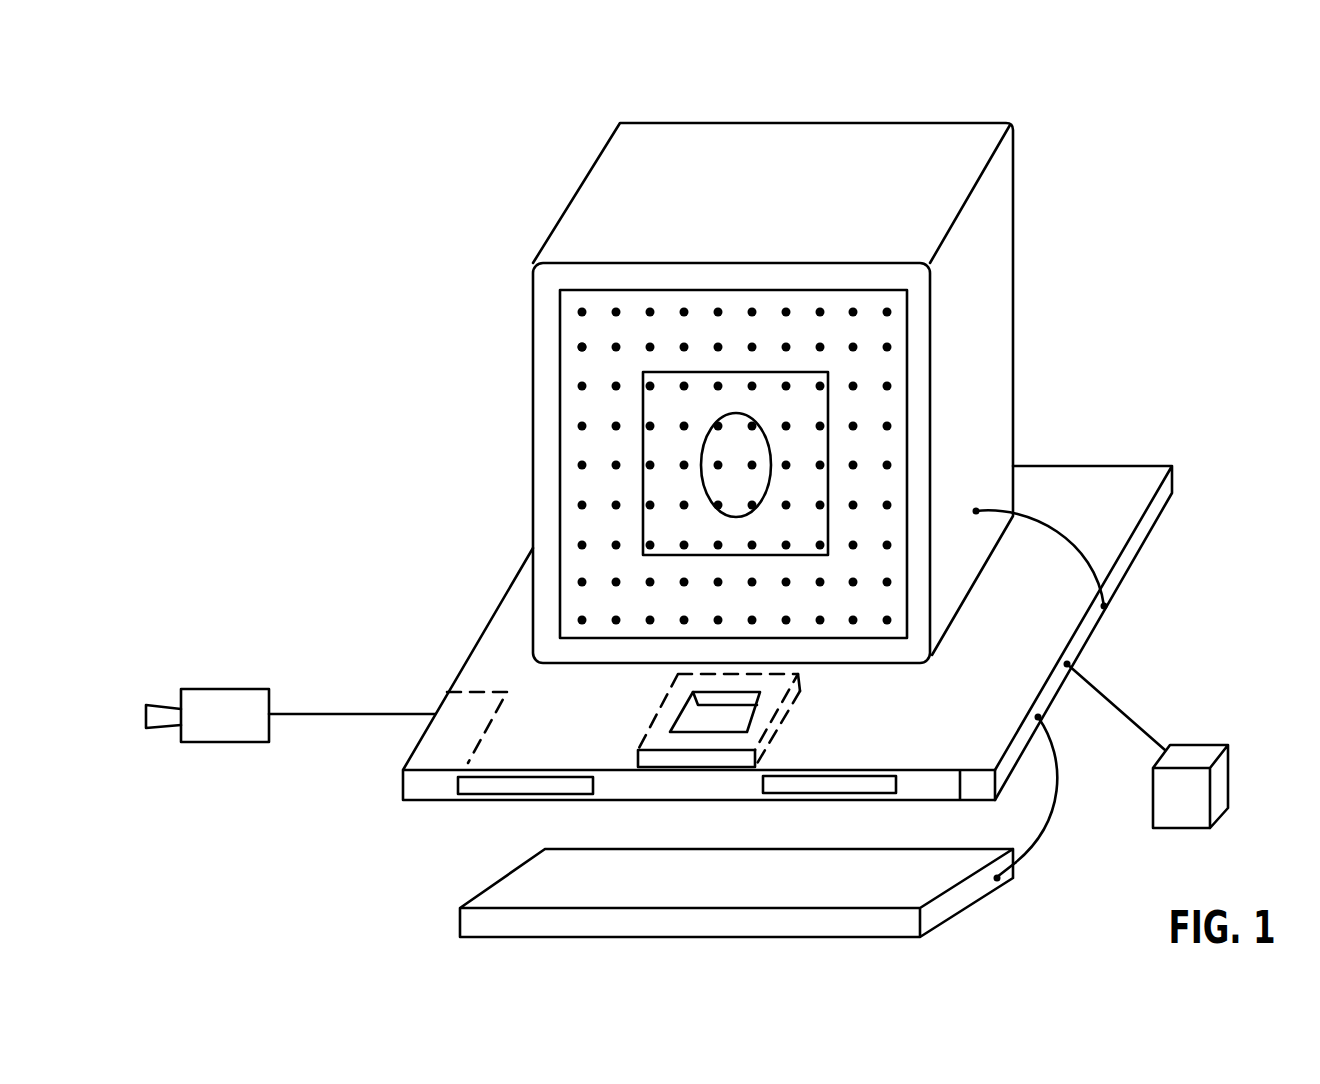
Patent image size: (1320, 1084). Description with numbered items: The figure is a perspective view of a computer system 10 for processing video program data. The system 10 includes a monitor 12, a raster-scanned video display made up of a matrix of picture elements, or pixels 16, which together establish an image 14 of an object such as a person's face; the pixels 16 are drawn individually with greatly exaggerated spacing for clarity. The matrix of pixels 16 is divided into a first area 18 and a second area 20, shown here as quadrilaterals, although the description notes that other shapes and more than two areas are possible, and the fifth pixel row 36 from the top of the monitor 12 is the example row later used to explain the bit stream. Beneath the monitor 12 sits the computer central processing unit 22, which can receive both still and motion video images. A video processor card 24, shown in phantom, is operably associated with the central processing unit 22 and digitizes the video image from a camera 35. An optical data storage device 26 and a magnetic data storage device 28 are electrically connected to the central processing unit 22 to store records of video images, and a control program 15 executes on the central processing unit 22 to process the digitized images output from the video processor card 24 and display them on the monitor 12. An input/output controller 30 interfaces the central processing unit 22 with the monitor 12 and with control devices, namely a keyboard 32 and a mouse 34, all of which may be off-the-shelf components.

The computer system 10 is at (1204, 190).
The monitor 12 is at (990, 302).
The image 14 is at (730, 414).
The control program 15 is at (735, 718).
The pixels 16 is at (685, 346).
The first area 18 is at (580, 368).
The second area 20 is at (665, 483).
The computer central processing unit 22 is at (512, 628).
The video processor card 24 is at (440, 742).
The optical data storage device 26 is at (483, 790).
The magnetic data storage device 28 is at (850, 792).
The input/output controller 30 is at (1147, 472).
The keyboard 32 is at (950, 905).
The mouse 34 is at (1220, 780).
The camera 35 is at (233, 742).
The fifth pixel row 36 is at (582, 345).